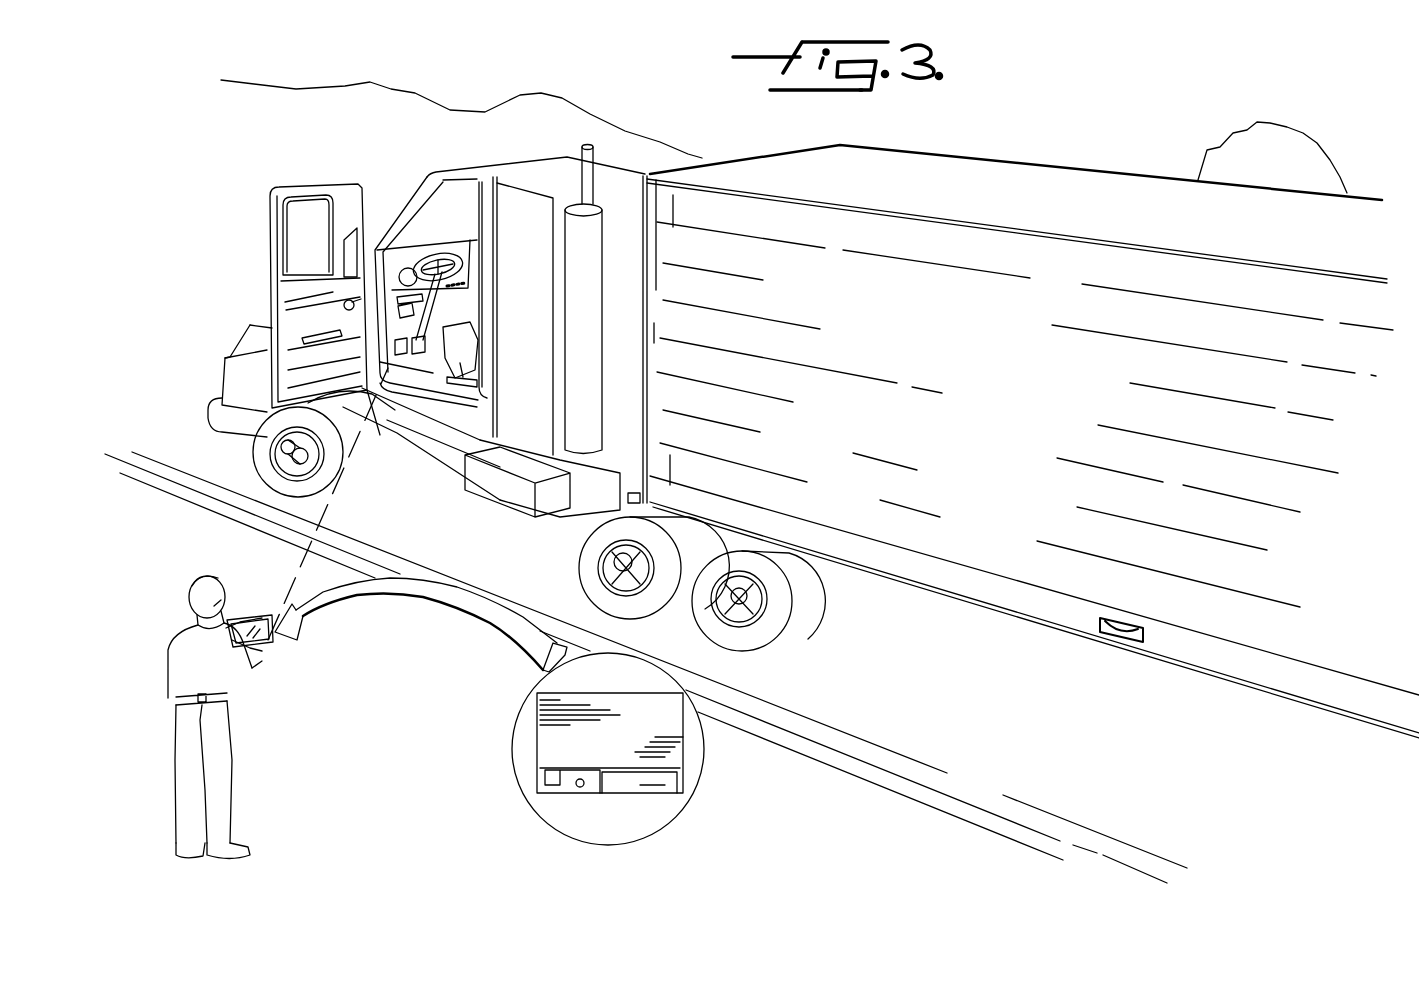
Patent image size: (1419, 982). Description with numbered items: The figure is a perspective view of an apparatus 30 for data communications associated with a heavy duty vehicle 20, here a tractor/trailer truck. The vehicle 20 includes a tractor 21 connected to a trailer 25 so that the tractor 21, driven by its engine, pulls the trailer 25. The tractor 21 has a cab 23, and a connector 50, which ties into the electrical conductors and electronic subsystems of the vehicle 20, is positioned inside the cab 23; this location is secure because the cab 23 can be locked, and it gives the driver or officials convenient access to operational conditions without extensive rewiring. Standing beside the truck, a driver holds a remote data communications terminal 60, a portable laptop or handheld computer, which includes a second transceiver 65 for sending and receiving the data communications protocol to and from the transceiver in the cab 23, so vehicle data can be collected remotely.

The heavy duty vehicle 20 is at (935, 628).
The tractor 21 is at (545, 317).
The cab 23 is at (430, 370).
The trailer 25 is at (1010, 393).
The apparatus for data communications 30 is at (233, 462).
The connector 50 is at (400, 306).
The remote data communications terminal 60 is at (680, 735).
The second transceiver 65 is at (598, 803).